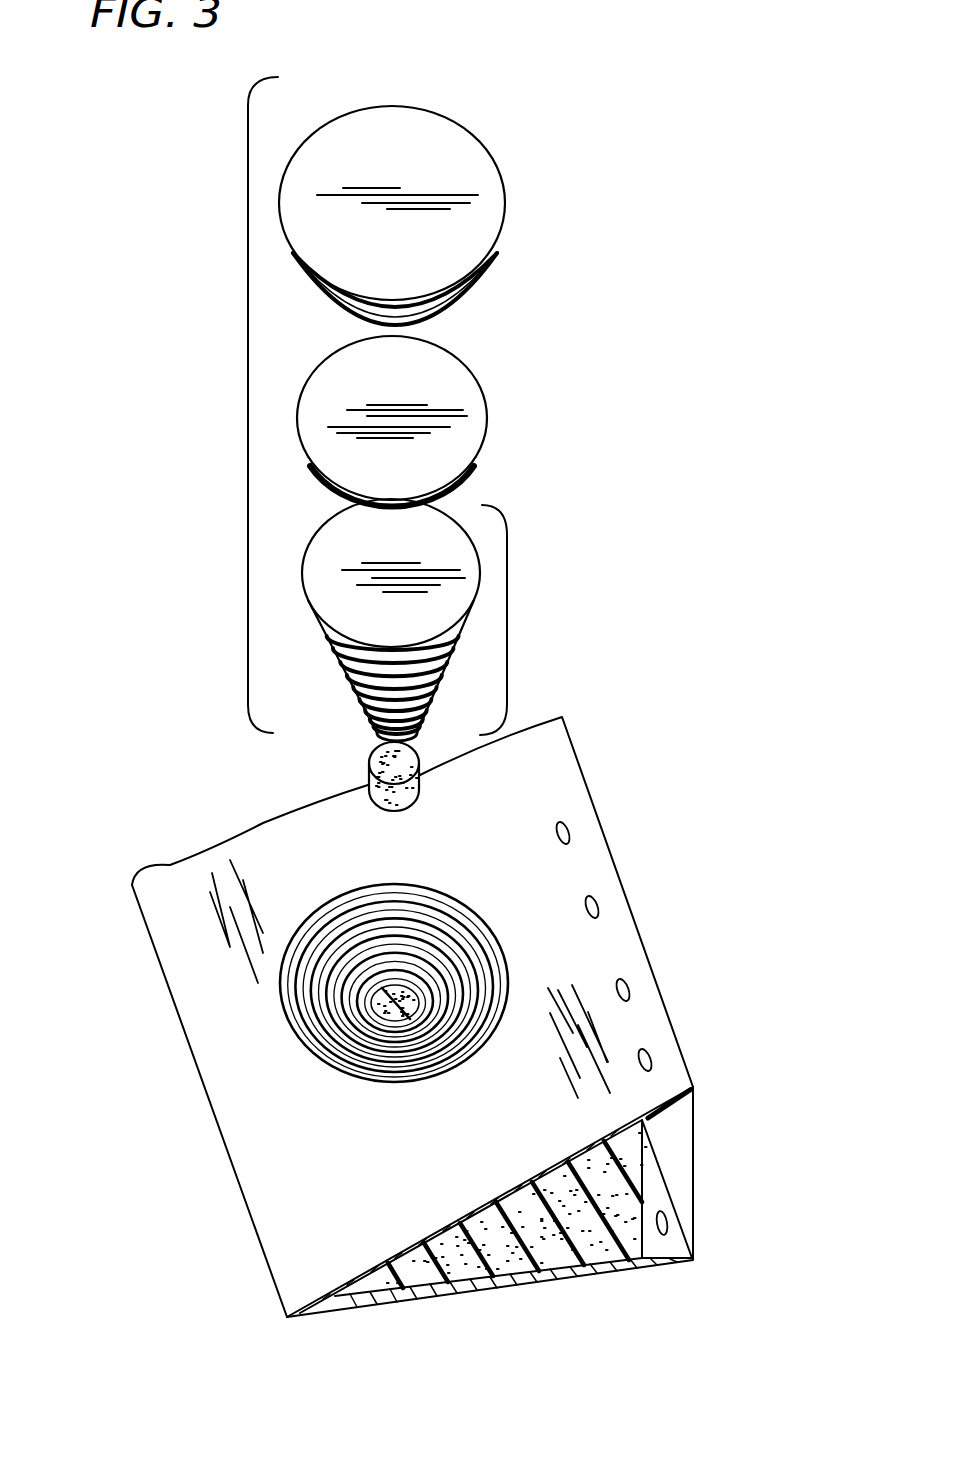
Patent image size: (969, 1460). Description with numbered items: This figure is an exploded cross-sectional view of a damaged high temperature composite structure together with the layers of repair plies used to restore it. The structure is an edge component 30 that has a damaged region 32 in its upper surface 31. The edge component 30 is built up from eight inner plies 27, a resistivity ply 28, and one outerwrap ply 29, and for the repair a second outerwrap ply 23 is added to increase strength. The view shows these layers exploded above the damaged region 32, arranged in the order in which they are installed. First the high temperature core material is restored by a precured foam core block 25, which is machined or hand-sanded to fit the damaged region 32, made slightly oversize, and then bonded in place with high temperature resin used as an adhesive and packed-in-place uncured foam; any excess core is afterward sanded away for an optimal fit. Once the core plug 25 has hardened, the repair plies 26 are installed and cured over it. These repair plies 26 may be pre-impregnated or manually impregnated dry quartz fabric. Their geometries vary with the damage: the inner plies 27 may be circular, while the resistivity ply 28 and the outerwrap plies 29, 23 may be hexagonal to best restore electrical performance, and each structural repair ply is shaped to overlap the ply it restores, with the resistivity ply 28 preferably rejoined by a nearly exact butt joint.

The second outerwrap ply 23 is at (443, 132).
The outerwrap ply 29 is at (455, 302).
The repair plies 26 is at (248, 372).
The resistivity ply 28 is at (476, 416).
The inner plies 27 is at (507, 601).
The core block 25 is at (423, 787).
The edge component 30 is at (165, 1071).
The damaged region 32 is at (386, 995).
The upper surface 31 is at (287, 1208).